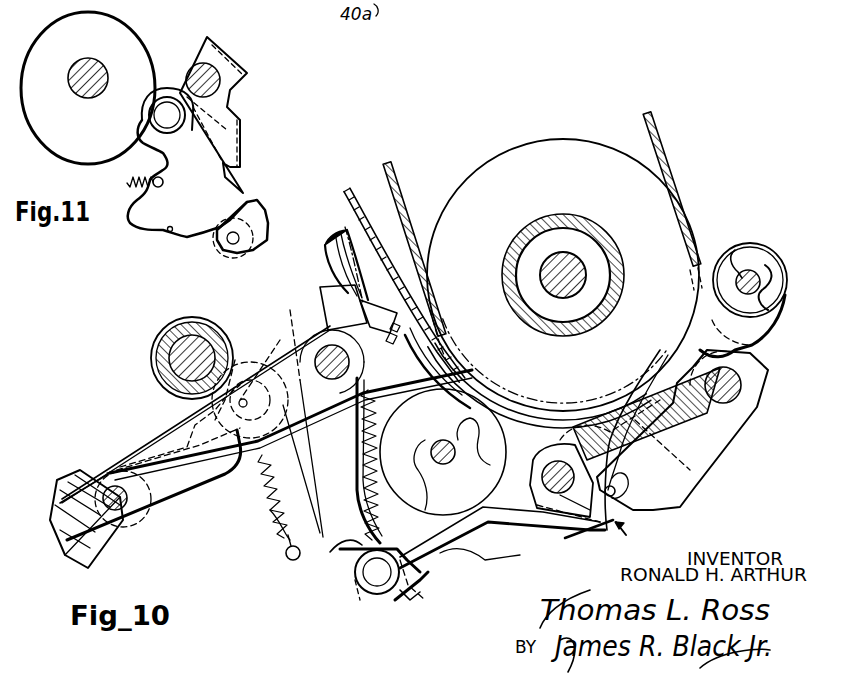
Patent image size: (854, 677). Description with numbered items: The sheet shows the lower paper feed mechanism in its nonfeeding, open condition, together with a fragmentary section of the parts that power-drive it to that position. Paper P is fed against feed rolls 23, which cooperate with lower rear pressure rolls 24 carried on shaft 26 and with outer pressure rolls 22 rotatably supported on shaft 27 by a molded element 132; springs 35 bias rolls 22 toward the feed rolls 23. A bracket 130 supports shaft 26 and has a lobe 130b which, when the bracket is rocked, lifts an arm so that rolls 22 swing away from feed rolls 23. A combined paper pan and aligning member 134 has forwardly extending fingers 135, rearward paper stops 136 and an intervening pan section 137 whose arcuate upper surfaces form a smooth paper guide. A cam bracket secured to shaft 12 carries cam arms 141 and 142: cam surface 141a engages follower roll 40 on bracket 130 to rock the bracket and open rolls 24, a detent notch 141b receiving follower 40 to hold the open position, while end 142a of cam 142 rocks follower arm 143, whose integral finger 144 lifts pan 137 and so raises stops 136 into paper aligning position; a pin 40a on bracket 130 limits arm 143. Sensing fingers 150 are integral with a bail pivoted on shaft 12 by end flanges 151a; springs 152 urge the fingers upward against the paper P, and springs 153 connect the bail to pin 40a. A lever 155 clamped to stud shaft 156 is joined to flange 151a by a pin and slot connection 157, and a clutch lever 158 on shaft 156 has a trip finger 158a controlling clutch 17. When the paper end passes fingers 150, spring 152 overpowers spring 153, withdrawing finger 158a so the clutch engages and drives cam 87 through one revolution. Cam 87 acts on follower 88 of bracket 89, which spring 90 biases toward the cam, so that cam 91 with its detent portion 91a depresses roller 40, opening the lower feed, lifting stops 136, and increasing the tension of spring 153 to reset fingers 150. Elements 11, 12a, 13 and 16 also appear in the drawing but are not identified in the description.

In FIG. 11, the hub shaft 11 is at (105, 72).
In FIG. 10, the hub shaft 11 is at (212, 350).
In FIG. 11, the shaft 12 is at (193, 70).
In FIG. 10, the shaft 12 is at (305, 345).
In FIG. 10, the roller arm 12a is at (318, 262).
In FIG. 10, the reel hub 13 is at (550, 258).
In FIG. 10, the roller sleeve 16 is at (200, 322).
In FIG. 10, the clutch 17 is at (148, 355).
In FIG. 10, the outer pressure rolls 22 is at (752, 246).
In FIG. 10, the feed rolls 23 is at (448, 206).
In FIG. 10, the lower rear pressure rolls 24 is at (443, 452).
In FIG. 10, the shaft 26 is at (448, 462).
In FIG. 10, the shaft 27 is at (760, 272).
In FIG. 10, the springs 35 is at (622, 526).
In FIG. 11, the follower roll 40 is at (220, 243).
In FIG. 10, the follower roll 40 is at (366, 598).
In FIG. 10, the pin 40a is at (372, 575).
In FIG. 11, the cam 87 is at (65, 148).
In FIG. 11, the follower 88 is at (167, 105).
In FIG. 11, the bracket 89 is at (128, 222).
In FIG. 11, the spring 90 is at (127, 183).
In FIG. 11, the cam 91 is at (187, 162).
In FIG. 11, the detent portion 91a is at (168, 233).
In FIG. 11, the bracket 130 is at (248, 196).
In FIG. 10, the bracket 130 is at (520, 550).
In FIG. 10, the lobe 130b is at (660, 482).
In FIG. 10, the element 132 is at (745, 350).
In FIG. 10, the combined paper pan and paper aligning member 134 is at (705, 432).
In FIG. 10, the fingers 135 is at (665, 350).
In FIG. 10, the paper stops 136 is at (535, 410).
In FIG. 10, the pan section 137 is at (626, 420).
In FIG. 10, the cam arm 141 is at (275, 490).
In FIG. 10, the cam surface 141a is at (300, 555).
In FIG. 10, the detent notch 141b is at (420, 605).
In FIG. 10, the cam arm 142 is at (338, 558).
In FIG. 10, the cam end 142a is at (428, 565).
In FIG. 10, the follower arm 143 is at (458, 550).
In FIG. 10, the finger 144 is at (645, 512).
In FIG. 10, the sensing fingers 150 is at (575, 440).
In FIG. 10, the end flanges 151a is at (297, 345).
In FIG. 10, the springs 152 is at (270, 510).
In FIG. 10, the springs 153 is at (355, 462).
In FIG. 10, the lever 155 is at (150, 430).
In FIG. 10, the stud shaft 156 is at (110, 468).
In FIG. 10, the pin and slot connection 157 is at (275, 345).
In FIG. 10, the clutch engaging and disengaging lever 158 is at (196, 505).
In FIG. 10, the trip finger 158a is at (205, 458).
In FIG. 10, the paper P is at (368, 195).